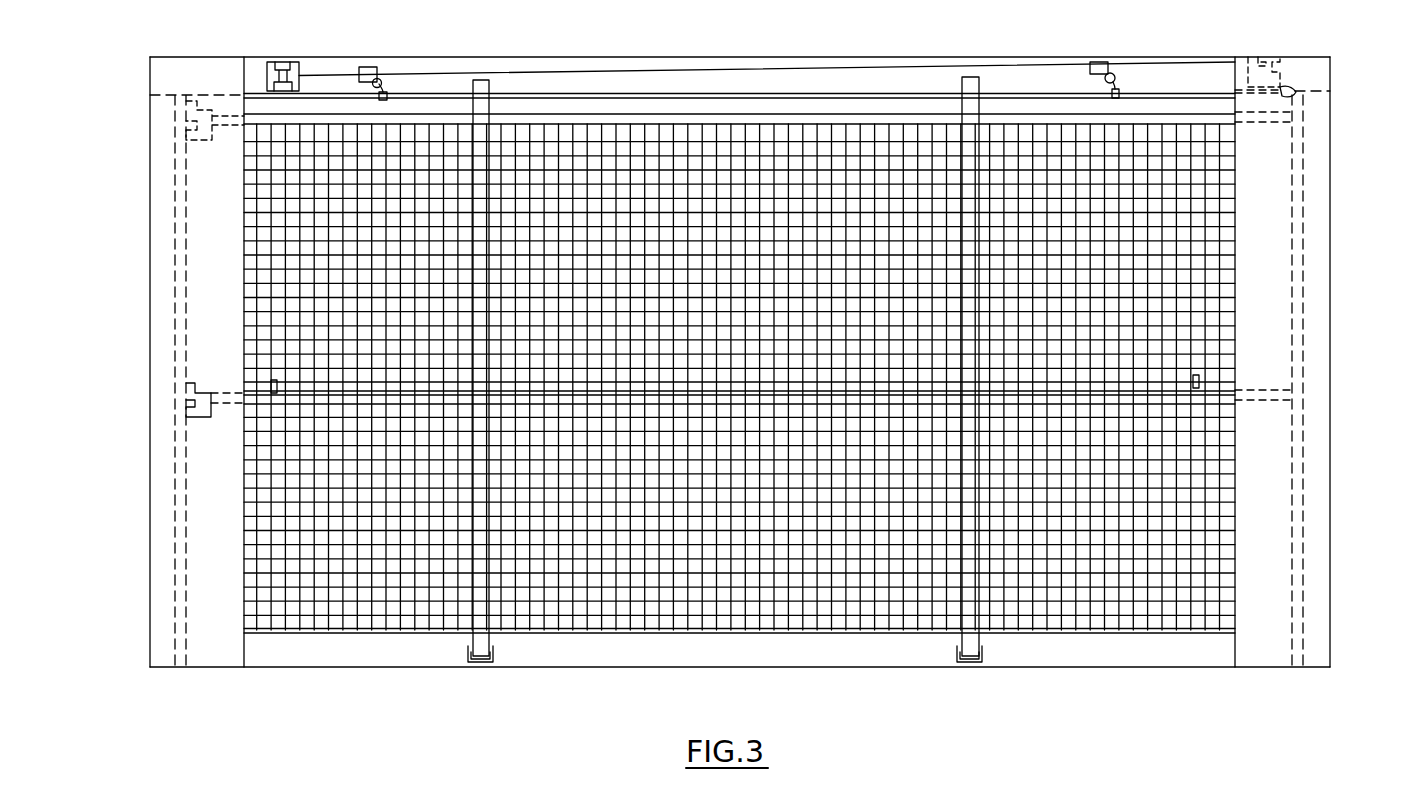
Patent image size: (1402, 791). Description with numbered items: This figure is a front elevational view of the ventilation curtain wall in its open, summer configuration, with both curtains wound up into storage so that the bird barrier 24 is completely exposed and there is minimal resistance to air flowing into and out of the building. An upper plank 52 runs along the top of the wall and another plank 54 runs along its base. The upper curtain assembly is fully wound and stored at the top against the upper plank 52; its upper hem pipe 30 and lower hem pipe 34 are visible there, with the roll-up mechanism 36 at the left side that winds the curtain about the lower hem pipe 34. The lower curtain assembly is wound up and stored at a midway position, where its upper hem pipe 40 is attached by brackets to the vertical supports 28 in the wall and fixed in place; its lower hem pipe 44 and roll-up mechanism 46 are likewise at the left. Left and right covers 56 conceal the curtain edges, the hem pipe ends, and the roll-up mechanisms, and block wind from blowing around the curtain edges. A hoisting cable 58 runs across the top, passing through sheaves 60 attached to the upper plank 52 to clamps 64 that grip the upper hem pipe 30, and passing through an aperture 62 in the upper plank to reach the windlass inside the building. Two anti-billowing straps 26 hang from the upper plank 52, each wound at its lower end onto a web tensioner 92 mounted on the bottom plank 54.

The bird barrier 24 is at (540, 175).
The anti-billowing straps 26 is at (972, 147).
The vertical supports 28 is at (200, 352).
The upper hem pipe 30 is at (835, 92).
The lower hem pipe 34 is at (1257, 120).
The roll-up mechanism 36 is at (182, 125).
The upper hem pipe 40 is at (1235, 382).
The lower hem pipe 44 is at (1260, 398).
The roll-up mechanism 46 is at (190, 405).
The upper plank 52 is at (672, 57).
The plank 54 is at (583, 655).
The covers 56 is at (160, 322).
The hoisting cable 58 is at (730, 68).
The sheaves 60 is at (381, 79).
The aperture 62 is at (284, 62).
The clamps 64 is at (388, 92).
The web tensioner 92 is at (468, 652).